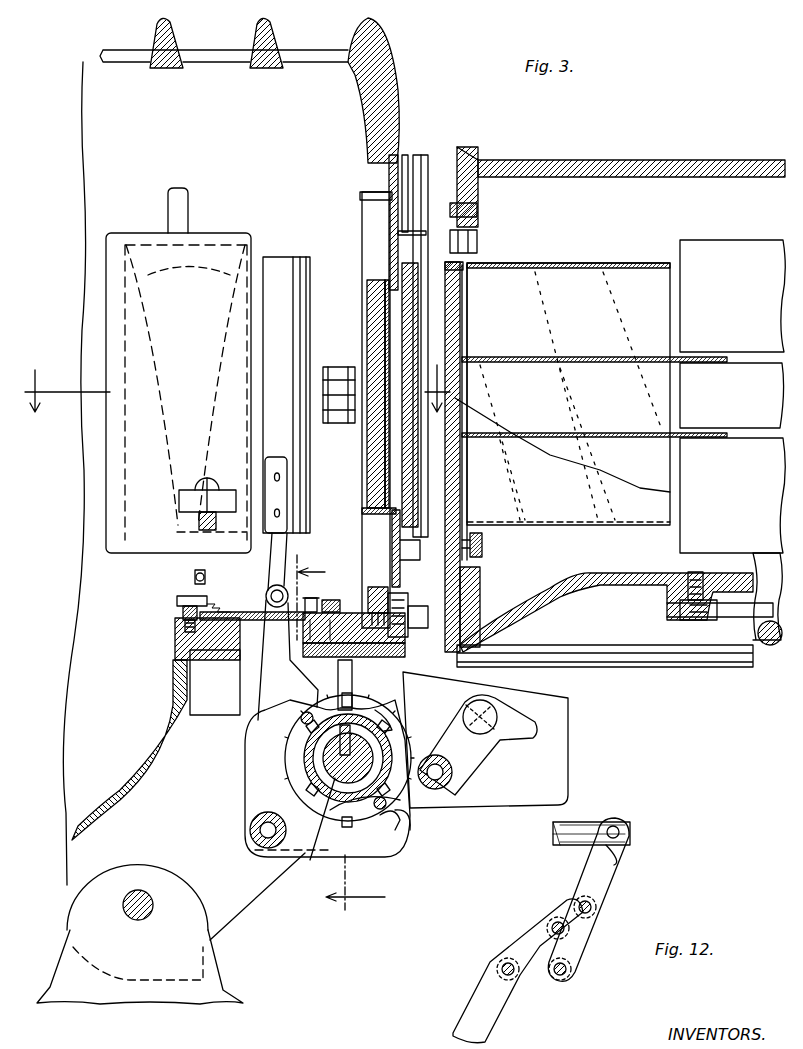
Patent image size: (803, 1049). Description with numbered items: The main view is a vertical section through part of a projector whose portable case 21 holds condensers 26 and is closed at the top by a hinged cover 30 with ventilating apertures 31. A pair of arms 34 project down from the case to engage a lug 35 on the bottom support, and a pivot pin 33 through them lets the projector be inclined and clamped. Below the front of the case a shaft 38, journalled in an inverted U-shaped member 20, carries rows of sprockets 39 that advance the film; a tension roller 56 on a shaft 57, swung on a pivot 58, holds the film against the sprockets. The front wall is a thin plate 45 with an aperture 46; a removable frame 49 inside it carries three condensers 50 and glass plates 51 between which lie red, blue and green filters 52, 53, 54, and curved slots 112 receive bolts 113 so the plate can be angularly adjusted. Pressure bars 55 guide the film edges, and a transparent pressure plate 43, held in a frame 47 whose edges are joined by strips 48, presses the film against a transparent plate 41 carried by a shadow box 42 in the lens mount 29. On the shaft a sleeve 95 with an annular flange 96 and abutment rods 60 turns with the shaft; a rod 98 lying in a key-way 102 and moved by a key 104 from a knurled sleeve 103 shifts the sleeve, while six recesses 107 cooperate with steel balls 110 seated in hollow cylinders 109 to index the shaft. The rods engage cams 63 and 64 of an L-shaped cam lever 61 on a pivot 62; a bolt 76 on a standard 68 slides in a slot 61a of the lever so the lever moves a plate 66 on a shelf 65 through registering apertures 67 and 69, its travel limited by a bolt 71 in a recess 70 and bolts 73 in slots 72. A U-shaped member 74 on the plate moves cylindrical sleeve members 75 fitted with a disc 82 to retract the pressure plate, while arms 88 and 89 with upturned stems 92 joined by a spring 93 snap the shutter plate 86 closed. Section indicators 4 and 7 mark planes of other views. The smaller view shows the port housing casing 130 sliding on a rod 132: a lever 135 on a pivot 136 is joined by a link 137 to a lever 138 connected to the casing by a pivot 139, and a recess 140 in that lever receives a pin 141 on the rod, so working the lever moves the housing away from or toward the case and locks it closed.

In FIG. 3, the section line 4 is at (352, 732).
In FIG. 3, the section line 7 is at (237, 403).
In FIG. 3, the inverted U-shaped member 20 is at (176, 670).
In FIG. 3, the portable case 21 is at (78, 135).
In FIG. 3, the condensers 26 is at (200, 270).
In FIG. 3, the lens mount or port housing 29 is at (566, 158).
In FIG. 3, the hinged cover 30 is at (118, 50).
In FIG. 3, the ventilating apertures 31 is at (207, 75).
In FIG. 3, the pivot pin 33 is at (126, 895).
In FIG. 3, the arms 34 is at (240, 912).
In FIG. 3, the lug 35 is at (62, 982).
In FIG. 3, the shaft 38 is at (315, 845).
In FIG. 3, the sprockets 39 is at (395, 725).
In FIG. 3, the transparent plate 41 is at (460, 322).
In FIG. 3, the shadow box 42 is at (588, 256).
In FIG. 3, the transparent pressure plate 43 is at (466, 298).
In FIG. 3, the plate 45 is at (388, 170).
In FIG. 3, the aperture 46 is at (390, 282).
In FIG. 3, the metal frame 47 is at (404, 266).
In FIG. 3, the strips 48 is at (460, 362).
In FIG. 3, the removable metal frame 49 is at (362, 195).
In FIG. 3, the condensers 50 is at (367, 322).
In FIG. 3, the glass plates 51 is at (368, 305).
In FIG. 3, the red filter 52 is at (386, 290).
In FIG. 3, the blue filter 53 is at (365, 365).
In FIG. 3, the green filter 54 is at (370, 466).
In FIG. 3, the pressure bars 55 is at (418, 542).
In FIG. 3, the tension roller 56 is at (455, 770).
In FIG. 3, the shaft 57 is at (448, 785).
In FIG. 3, the pivot 58 is at (490, 700).
In FIG. 3, the abutment rods 60 is at (330, 705).
In FIG. 3, the cam lever 61 is at (262, 744).
In FIG. 3, the slot 61a is at (274, 582).
In FIG. 3, the pivot 62 is at (262, 848).
In FIG. 3, the cam 63 is at (405, 828).
In FIG. 3, the cam 64 is at (310, 700).
In FIG. 3, the shelf 65 is at (220, 640).
In FIG. 3, the plate 66 is at (195, 648).
In FIG. 3, the aperture 67 is at (250, 640).
In FIG. 3, the standard 68 is at (285, 556).
In FIG. 3, the aperture 69 is at (266, 600).
In FIG. 3, the recess 70 is at (190, 635).
In FIG. 3, the bolt 71 is at (180, 600).
In FIG. 3, the elongated slots 72 is at (352, 367).
In FIG. 3, the bolt 73 is at (309, 598).
In FIG. 3, the U-shaped member 74 is at (340, 390).
In FIG. 3, the cylindrical sleeve members 75 is at (340, 400).
In FIG. 3, the bolt 76 is at (266, 590).
In FIG. 3, the disc 82 is at (340, 412).
In FIG. 3, the shutter plate 86 is at (278, 265).
In FIG. 3, the arm 88 is at (185, 612).
In FIG. 3, the arm 89 is at (186, 628).
In FIG. 3, the stems 92 is at (196, 576).
In FIG. 3, the tensile spring 93 is at (198, 582).
In FIG. 3, the sleeve 95 is at (360, 822).
In FIG. 3, the annular flange 96 is at (340, 778).
In FIG. 3, the rod 98 is at (320, 748).
In FIG. 3, the key-way 102 is at (745, 304).
In FIG. 3, the knurled sleeve 103 is at (740, 401).
In FIG. 3, the key 104 is at (740, 500).
In FIG. 3, the recesses 107 is at (408, 715).
In FIG. 3, the hollow cylinder 109 is at (352, 676).
In FIG. 3, the steel ball 110 is at (340, 678).
In FIG. 3, the curved slots 112 is at (378, 590).
In FIG. 3, the bolts 113 is at (400, 637).
In FIG. 3, the casing 130 is at (608, 160).
In FIG. 3, the rod 132 is at (770, 645).
In FIG. 12, the rod 132 is at (590, 825).
In FIG. 3, the lever 135 is at (688, 588).
In FIG. 12, the lever 135 is at (480, 1003).
In FIG. 3, the pivot 136 is at (700, 612).
In FIG. 12, the pivot 136 is at (500, 962).
In FIG. 12, the link 137 is at (562, 912).
In FIG. 12, the lever 138 is at (604, 888).
In FIG. 12, the pivot 139 is at (572, 970).
In FIG. 12, the recess 140 is at (616, 860).
In FIG. 12, the pin 141 is at (620, 830).